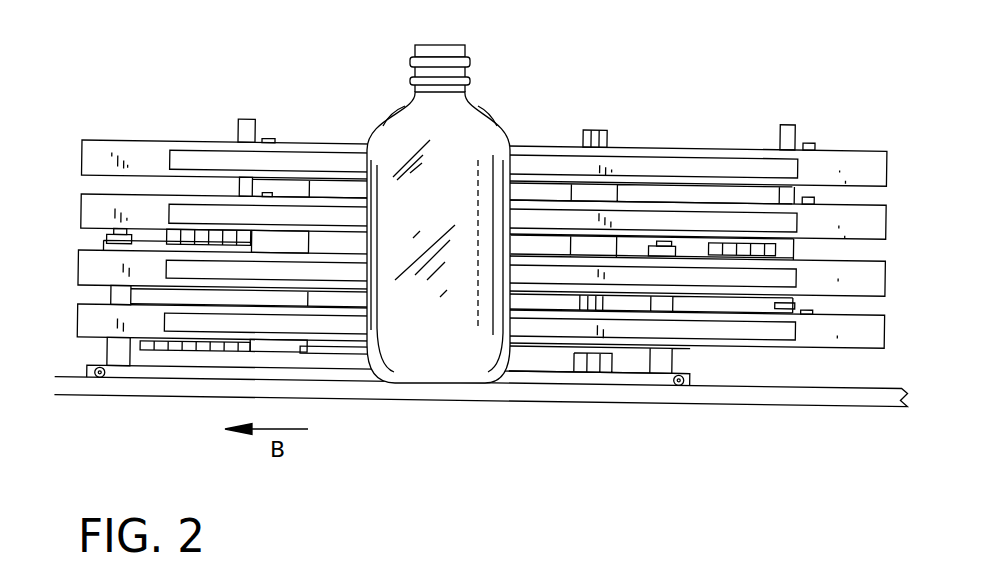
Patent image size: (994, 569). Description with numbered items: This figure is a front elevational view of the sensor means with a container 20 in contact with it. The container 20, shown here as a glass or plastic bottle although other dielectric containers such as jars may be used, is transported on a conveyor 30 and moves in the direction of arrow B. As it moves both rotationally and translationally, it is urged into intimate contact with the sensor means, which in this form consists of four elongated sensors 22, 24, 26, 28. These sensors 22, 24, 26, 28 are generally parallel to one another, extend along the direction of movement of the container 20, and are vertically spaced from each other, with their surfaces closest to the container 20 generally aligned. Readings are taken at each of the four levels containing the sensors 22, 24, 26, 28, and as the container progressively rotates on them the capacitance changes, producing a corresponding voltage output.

The container 20 is at (490, 104).
The elongated sensor 22 is at (218, 160).
The elongated sensor 24 is at (287, 212).
The elongated sensor 26 is at (248, 269).
The elongated sensor 28 is at (283, 322).
The conveyor 30 is at (532, 381).